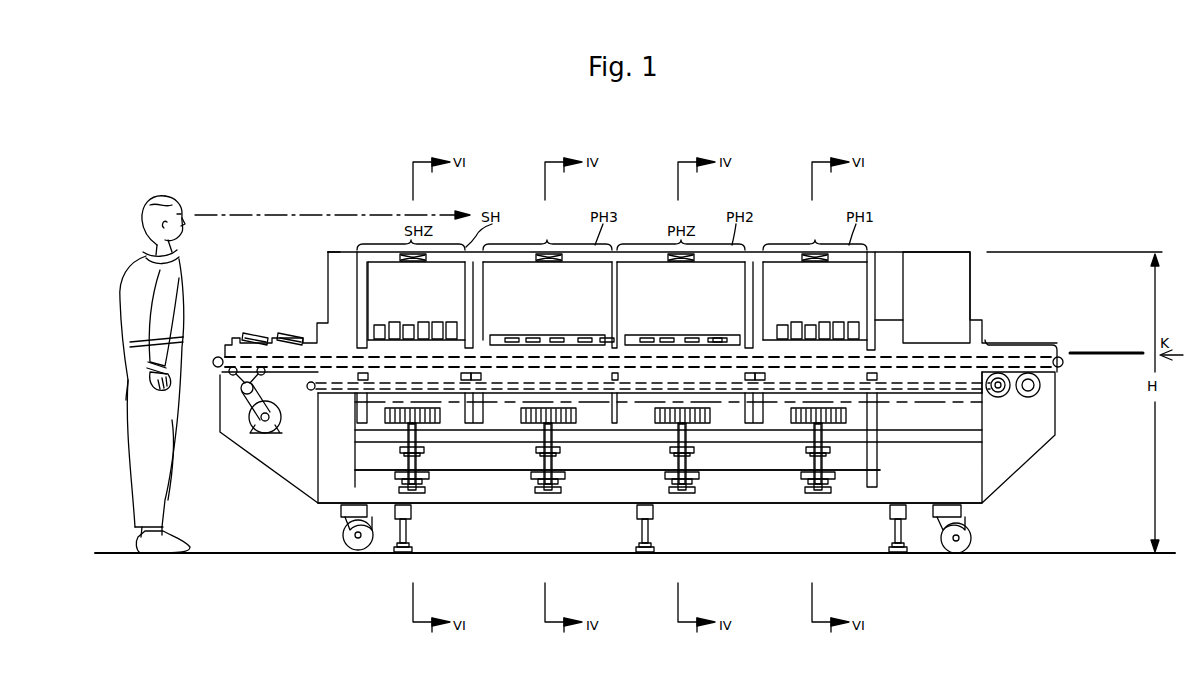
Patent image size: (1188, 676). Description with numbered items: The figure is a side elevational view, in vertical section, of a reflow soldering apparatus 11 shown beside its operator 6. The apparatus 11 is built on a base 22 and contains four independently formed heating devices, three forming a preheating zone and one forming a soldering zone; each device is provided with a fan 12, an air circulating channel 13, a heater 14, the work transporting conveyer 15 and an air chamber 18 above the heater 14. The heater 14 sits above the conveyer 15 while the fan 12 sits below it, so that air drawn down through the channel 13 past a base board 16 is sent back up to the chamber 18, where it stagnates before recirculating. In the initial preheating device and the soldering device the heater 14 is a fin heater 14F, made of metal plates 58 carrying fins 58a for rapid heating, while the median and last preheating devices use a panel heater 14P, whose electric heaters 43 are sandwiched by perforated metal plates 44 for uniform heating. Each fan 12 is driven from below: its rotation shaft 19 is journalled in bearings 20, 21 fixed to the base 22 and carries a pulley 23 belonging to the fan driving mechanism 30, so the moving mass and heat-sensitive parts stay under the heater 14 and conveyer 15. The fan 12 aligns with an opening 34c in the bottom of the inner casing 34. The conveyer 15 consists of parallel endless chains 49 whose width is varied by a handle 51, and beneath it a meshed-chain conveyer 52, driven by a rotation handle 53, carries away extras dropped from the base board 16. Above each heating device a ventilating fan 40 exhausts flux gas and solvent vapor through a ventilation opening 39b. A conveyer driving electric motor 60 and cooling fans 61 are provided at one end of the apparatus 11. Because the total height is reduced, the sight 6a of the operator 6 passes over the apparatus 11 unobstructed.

The operator 6 is at (190, 281).
The sight of the operator 6a is at (264, 213).
The reflow soldering apparatus 11 is at (965, 238).
The fan 12 is at (440, 413).
The air circulating channel 13 is at (372, 314).
The heater 14 is at (452, 322).
The fin heater 14F is at (437, 322).
The panel heater 14P is at (542, 336).
The work transporting conveyer 15 is at (1010, 352).
The base board 16 is at (1104, 352).
The air chamber 18 is at (372, 271).
The rotation shaft 19 is at (404, 459).
The bearing 20 is at (424, 450).
The bearing 21 is at (426, 476).
The base 22 is at (792, 504).
The pulley 23 is at (426, 493).
The fan driving mechanism 30 is at (468, 498).
The inner casing 34 is at (357, 426).
The opening 34c is at (385, 404).
The ventilation opening 39b is at (337, 251).
The ventilating fan 40 is at (549, 256).
The electric heater 43 is at (508, 335).
The metal plate 44 is at (592, 336).
The endless chain 49 is at (1035, 352).
The handle 51 is at (1041, 386).
The conveyer 52 is at (955, 392).
The rotation handle 53 is at (1010, 396).
The metal plate 58 is at (406, 322).
The fins 58a is at (380, 324).
The conveyer driving electric motor 60 is at (240, 432).
The cooling fans 61 is at (290, 333).